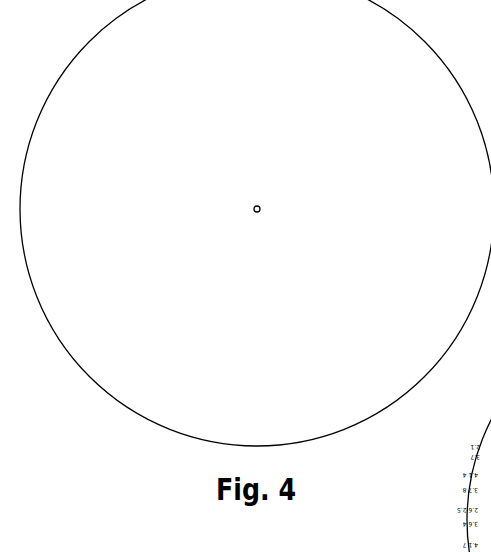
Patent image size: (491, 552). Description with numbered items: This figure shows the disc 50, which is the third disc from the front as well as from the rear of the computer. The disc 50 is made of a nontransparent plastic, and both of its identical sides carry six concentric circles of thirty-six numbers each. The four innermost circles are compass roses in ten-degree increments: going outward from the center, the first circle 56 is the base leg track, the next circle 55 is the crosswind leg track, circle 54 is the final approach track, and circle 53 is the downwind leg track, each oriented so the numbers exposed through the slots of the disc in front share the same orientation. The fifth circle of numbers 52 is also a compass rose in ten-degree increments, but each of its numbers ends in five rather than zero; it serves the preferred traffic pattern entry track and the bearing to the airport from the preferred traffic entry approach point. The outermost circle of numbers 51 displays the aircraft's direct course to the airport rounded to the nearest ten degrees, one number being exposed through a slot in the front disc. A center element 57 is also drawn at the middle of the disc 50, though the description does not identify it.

The disc 50 is at (251, 54).
The outermost circle of numbers 51 is at (257, 410).
The fifth circle of numbers 52 is at (341, 287).
The downwind leg track circle 53 is at (255, 326).
The final approach track circle 54 is at (256, 118).
The crosswind leg track circle 55 is at (182, 204).
The base leg track circle 56 is at (313, 210).
The center pivot 57 is at (257, 213).